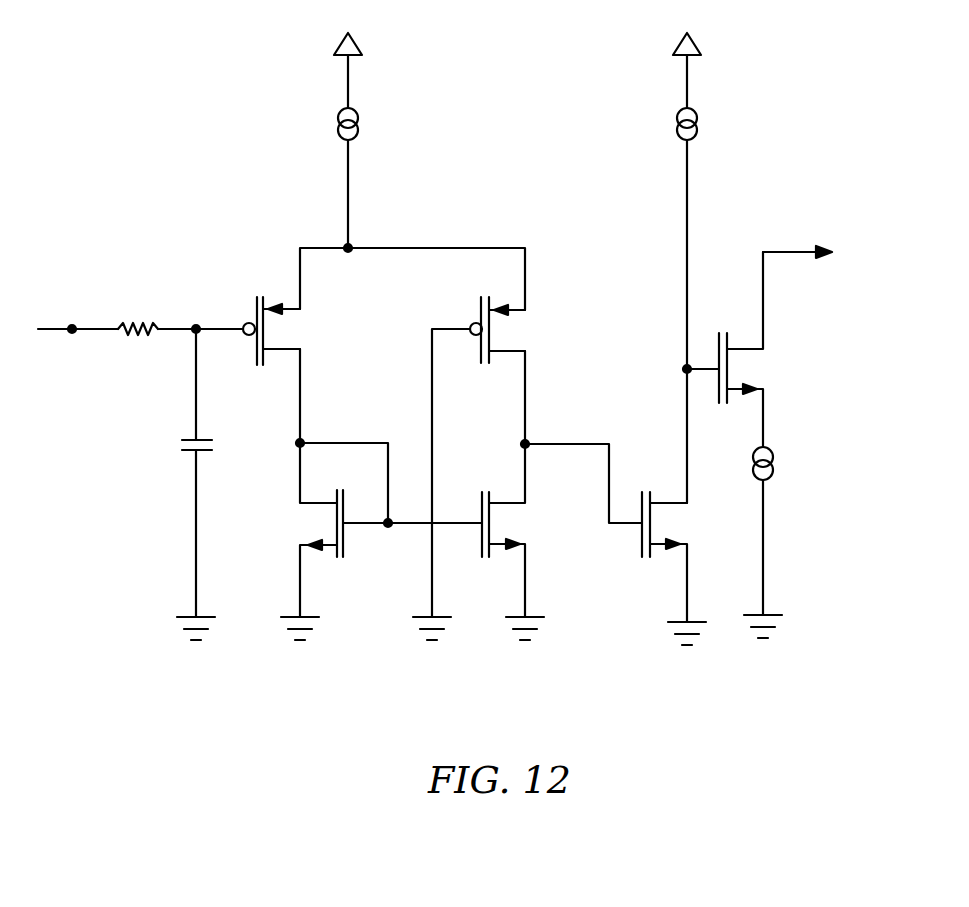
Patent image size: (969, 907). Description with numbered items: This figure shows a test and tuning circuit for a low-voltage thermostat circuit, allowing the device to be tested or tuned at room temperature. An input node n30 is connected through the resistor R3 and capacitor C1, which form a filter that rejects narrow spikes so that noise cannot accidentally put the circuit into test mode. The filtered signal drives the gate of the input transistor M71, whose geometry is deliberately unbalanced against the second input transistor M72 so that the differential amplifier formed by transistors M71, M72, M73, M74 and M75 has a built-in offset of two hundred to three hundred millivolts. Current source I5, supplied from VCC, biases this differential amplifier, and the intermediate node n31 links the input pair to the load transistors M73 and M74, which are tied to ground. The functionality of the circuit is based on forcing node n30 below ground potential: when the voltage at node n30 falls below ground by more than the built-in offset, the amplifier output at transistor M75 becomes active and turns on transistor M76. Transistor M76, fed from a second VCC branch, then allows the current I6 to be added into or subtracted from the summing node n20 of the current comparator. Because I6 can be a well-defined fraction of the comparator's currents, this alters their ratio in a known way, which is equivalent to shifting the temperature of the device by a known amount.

The resistor R3 is at (138, 312).
The capacitor C1 is at (206, 484).
The input transistor M71 is at (285, 370).
The input transistor M72 is at (480, 468).
The transistor M73 is at (329, 541).
The transistor M74 is at (515, 542).
The transistor M75 is at (677, 568).
The transistor M76 is at (753, 349).
The current source I5 is at (530, 124).
The current source I6 is at (771, 542).
The node n30 is at (78, 345).
The node n31 is at (321, 480).
The summing node n20 is at (813, 226).
The supply voltage Vcc VCC is at (511, 54).